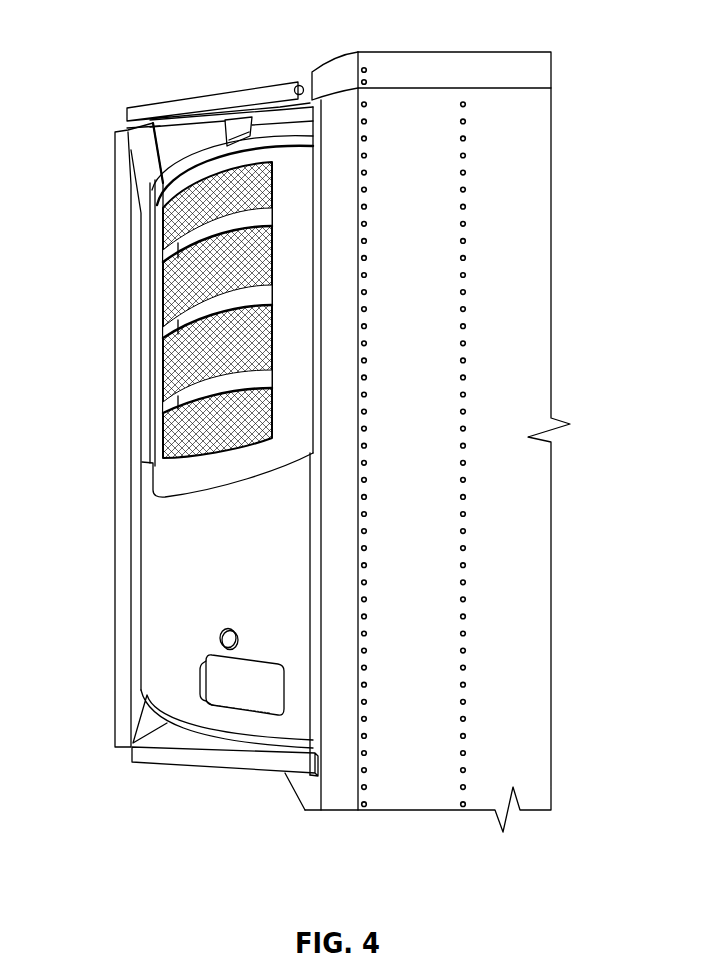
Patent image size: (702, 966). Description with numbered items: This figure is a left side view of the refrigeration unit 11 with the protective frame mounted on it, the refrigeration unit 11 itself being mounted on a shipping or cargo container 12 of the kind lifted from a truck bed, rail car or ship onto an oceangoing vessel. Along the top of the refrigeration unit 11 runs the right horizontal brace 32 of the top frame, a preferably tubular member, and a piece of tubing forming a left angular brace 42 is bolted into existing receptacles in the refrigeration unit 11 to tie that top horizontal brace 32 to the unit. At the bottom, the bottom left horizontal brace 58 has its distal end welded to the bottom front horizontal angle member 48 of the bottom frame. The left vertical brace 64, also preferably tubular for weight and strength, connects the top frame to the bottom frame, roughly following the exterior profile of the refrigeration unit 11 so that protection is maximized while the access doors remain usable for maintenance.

The refrigeration unit 11 is at (173, 598).
The shipping container 12 is at (500, 73).
The right horizontal brace 32 is at (165, 108).
The left angular brace 42 is at (242, 125).
The bottom front horizontal angle member 48 is at (155, 722).
The bottom left horizontal brace 58 is at (195, 752).
The left vertical brace 64 is at (125, 480).